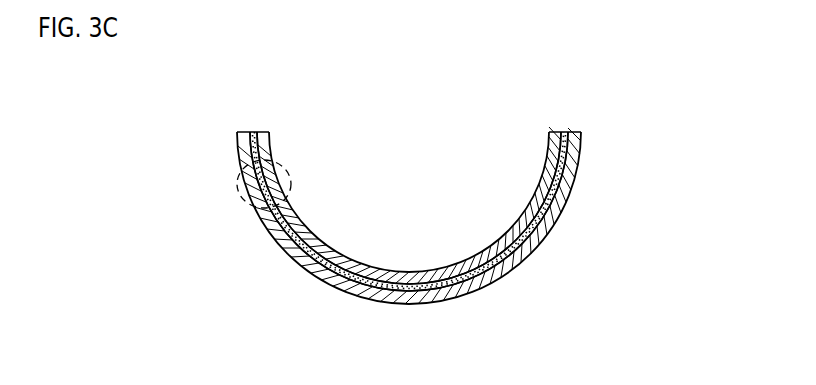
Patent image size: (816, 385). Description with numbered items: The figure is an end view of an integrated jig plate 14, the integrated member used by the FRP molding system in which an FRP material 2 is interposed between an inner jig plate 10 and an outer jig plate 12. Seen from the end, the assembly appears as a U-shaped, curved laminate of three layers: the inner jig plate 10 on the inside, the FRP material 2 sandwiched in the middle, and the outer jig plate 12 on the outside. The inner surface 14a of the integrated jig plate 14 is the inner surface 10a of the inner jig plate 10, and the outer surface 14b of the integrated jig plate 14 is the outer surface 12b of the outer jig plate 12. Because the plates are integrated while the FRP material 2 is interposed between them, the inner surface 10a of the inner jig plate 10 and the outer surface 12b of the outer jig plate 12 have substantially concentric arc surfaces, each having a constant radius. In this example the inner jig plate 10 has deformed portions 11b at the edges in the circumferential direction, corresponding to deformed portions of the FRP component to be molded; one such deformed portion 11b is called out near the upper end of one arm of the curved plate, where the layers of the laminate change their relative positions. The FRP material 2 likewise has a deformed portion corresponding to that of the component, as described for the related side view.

The FRP material 2 is at (251, 131).
The inner jig plate 10 is at (536, 142).
The inner surface of the inner jig plate 10a is at (409, 208).
The outer jig plate 12 is at (599, 157).
The outer surface of the outer jig plate 12b is at (409, 211).
The integrated jig plate 14 is at (215, 156).
The inner surface of the integrated jig plate 14a is at (405, 273).
The outer surface of the integrated jig plate 14b is at (513, 273).
The deformed portion 11b is at (290, 178).